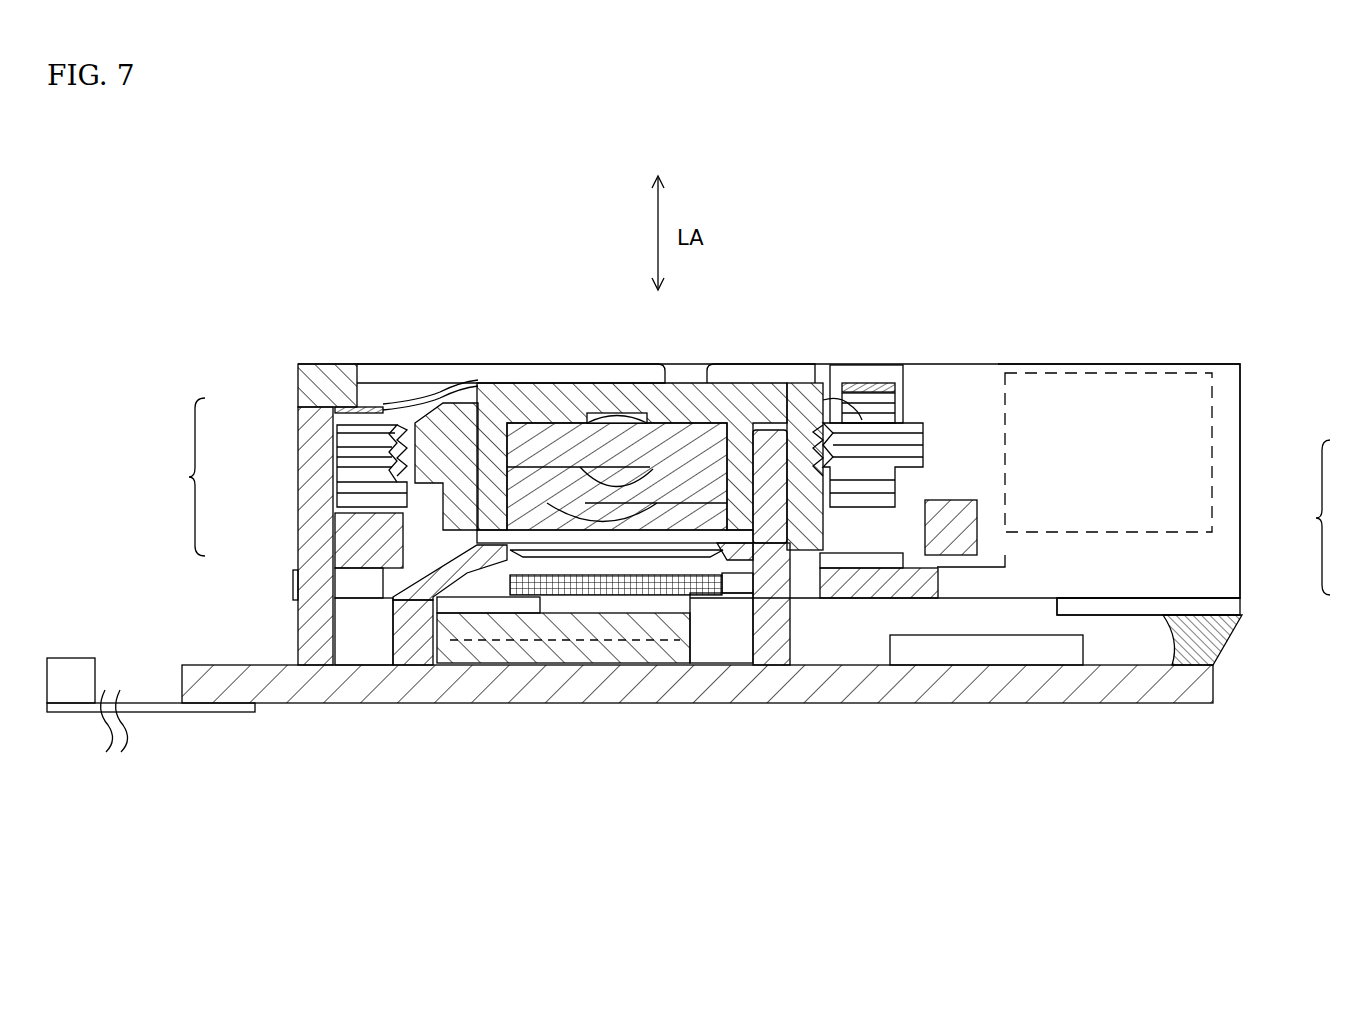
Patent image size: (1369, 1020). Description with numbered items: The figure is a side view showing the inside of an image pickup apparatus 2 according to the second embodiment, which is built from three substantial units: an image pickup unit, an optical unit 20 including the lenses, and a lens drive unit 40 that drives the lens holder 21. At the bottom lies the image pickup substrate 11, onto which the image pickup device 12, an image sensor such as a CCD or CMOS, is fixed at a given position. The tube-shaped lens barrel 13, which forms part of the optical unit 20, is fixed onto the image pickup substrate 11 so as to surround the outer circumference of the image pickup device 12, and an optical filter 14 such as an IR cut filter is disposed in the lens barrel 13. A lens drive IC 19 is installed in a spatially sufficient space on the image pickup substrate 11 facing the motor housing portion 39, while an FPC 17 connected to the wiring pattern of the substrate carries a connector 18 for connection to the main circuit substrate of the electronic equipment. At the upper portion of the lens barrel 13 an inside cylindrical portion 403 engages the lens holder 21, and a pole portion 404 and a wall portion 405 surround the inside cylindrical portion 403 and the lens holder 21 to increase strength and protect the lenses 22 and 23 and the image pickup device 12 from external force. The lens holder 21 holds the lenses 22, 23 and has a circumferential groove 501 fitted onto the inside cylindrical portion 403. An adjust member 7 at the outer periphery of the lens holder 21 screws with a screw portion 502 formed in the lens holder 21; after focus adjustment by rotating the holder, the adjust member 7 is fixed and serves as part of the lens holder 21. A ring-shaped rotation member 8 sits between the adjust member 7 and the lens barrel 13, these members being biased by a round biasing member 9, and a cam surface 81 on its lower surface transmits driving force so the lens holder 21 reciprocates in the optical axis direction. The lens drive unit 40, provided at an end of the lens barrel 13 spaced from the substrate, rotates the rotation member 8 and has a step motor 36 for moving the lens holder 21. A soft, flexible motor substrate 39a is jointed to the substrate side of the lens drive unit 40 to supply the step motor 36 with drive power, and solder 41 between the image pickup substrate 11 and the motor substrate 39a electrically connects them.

The image pickup apparatus 2 is at (572, 262).
The adjust member 7 is at (297, 430).
The rotation member 8 is at (330, 530).
The biasing member 9 is at (378, 410).
The image pickup substrate 11 is at (340, 700).
The image pickup device 12 is at (512, 655).
The lens barrel 13 is at (848, 596).
The optical filter 14 is at (648, 596).
The FPC 17 is at (170, 712).
The connector 18 is at (67, 672).
The lens drive IC 19 is at (985, 655).
The optical unit 20 is at (178, 477).
The lens holder 21 is at (550, 396).
The lens 22 is at (570, 440).
The lens 23 is at (596, 488).
The step motor 36 is at (1105, 372).
The motor housing portion 39 is at (1225, 478).
The motor substrate 39a is at (1232, 608).
The lens drive unit 40 is at (1342, 517).
The solder 41 is at (1218, 638).
The cam surface 81 is at (863, 560).
The inside cylindrical portion 403 is at (297, 488).
The pole portion 404 is at (300, 372).
The wall portion 405 is at (417, 395).
The circumferential groove 501 is at (768, 436).
The screw portion 502 is at (866, 435).